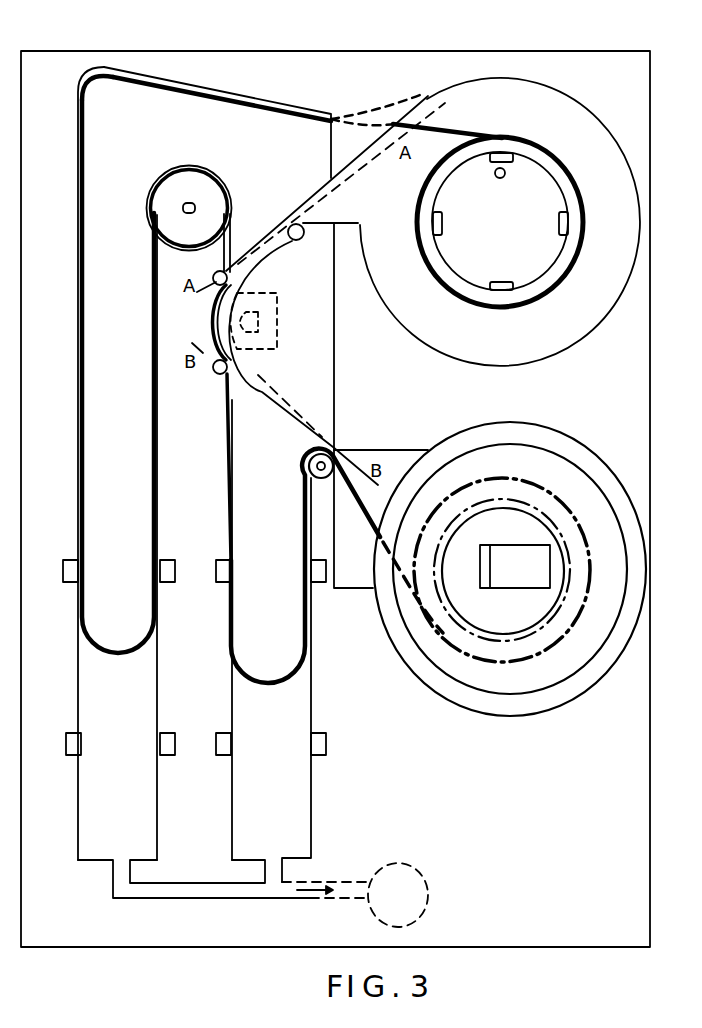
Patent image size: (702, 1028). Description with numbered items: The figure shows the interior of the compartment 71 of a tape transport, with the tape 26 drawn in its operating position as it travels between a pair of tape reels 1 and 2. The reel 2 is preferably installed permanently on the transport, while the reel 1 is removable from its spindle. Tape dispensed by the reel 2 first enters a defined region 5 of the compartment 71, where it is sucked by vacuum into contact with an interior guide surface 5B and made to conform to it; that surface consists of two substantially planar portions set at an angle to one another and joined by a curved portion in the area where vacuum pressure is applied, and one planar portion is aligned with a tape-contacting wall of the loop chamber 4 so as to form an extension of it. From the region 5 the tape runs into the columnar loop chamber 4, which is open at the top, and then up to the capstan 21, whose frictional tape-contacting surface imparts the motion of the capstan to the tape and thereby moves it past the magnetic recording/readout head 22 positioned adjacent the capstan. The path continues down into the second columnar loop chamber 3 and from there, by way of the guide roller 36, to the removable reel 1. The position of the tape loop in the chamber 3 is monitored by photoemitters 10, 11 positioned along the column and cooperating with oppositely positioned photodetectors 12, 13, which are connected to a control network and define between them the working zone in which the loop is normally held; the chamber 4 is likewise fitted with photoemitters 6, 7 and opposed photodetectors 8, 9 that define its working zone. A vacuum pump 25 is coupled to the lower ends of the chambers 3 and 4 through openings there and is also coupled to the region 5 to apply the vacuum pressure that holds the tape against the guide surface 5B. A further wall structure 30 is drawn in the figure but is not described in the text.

The tape reel 1 is at (517, 677).
The tape reel 2 is at (532, 263).
The loop chamber 3 is at (283, 785).
The loop chamber 4 is at (118, 782).
The defined region 5 is at (103, 102).
The interior guide surface 5B is at (88, 70).
The photoemitter 6 is at (173, 562).
The photoemitter 7 is at (169, 755).
The photodetector 8 is at (65, 562).
The photodetector 9 is at (74, 752).
The photoemitter 10 is at (217, 584).
The photoemitter 11 is at (221, 734).
The photodetector 12 is at (318, 590).
The photodetector 13 is at (327, 733).
The capstan 21 is at (188, 173).
The magnetic recording/readout head 22 is at (277, 312).
The vacuum pump 25 is at (416, 872).
The tape 26 is at (249, 106).
The partition wall 30 is at (303, 267).
The guide roller 36 is at (333, 452).
The compartment 71 is at (144, 106).